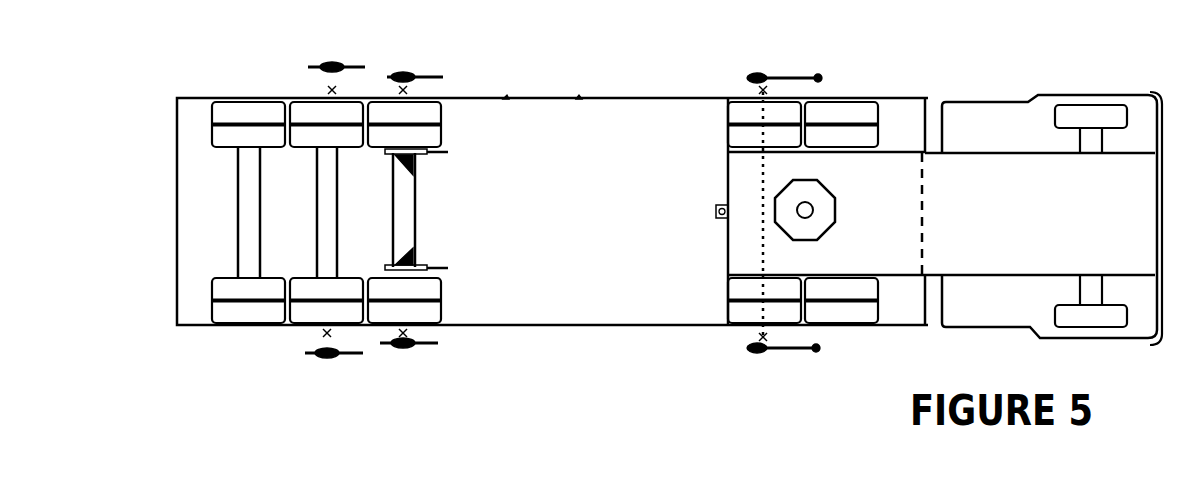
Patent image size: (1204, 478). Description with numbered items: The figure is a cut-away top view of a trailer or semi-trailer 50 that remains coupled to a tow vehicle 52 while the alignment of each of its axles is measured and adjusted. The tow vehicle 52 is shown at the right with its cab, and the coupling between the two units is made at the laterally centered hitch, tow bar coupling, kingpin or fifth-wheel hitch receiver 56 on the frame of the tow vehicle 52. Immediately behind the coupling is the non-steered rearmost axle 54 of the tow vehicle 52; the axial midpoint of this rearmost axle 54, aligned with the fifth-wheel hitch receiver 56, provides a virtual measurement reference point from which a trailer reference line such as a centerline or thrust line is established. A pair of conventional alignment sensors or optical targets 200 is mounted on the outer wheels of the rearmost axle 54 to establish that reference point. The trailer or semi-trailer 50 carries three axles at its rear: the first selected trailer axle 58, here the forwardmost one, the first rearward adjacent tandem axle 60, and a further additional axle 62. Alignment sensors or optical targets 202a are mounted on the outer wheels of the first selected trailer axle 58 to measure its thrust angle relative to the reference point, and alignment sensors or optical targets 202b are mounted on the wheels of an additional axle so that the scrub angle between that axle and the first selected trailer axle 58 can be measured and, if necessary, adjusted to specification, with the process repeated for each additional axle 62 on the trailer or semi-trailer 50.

The trailer or semi-trailer 50 is at (552, 210).
The tow vehicle 52 is at (1043, 218).
The rearmost axle of the tow vehicle 54 is at (758, 177).
The fifth-wheel hitch receiver 56 is at (812, 200).
The first selected trailer axle 58 is at (405, 210).
The first rearward adjacent tandem axle 60 is at (330, 207).
The further additional axles 62 is at (247, 207).
The alignment sensors or optical targets 200 is at (757, 73).
The alignment sensors or optical targets 202a is at (403, 72).
The alignment sensors or optical targets 202b is at (332, 62).